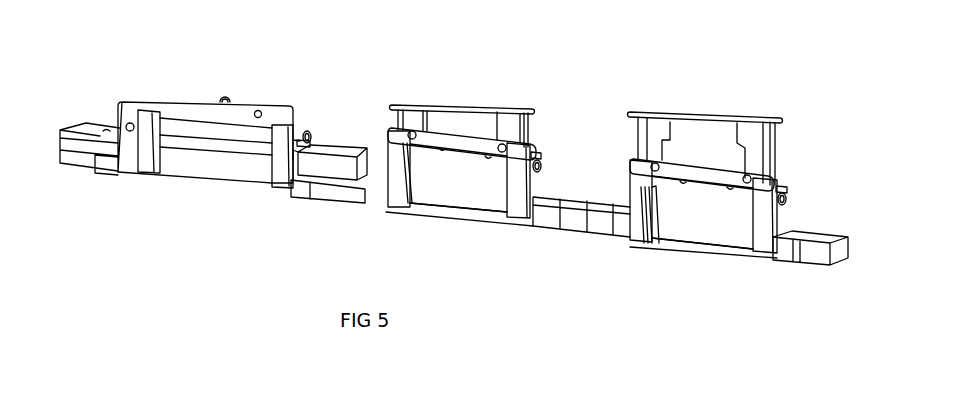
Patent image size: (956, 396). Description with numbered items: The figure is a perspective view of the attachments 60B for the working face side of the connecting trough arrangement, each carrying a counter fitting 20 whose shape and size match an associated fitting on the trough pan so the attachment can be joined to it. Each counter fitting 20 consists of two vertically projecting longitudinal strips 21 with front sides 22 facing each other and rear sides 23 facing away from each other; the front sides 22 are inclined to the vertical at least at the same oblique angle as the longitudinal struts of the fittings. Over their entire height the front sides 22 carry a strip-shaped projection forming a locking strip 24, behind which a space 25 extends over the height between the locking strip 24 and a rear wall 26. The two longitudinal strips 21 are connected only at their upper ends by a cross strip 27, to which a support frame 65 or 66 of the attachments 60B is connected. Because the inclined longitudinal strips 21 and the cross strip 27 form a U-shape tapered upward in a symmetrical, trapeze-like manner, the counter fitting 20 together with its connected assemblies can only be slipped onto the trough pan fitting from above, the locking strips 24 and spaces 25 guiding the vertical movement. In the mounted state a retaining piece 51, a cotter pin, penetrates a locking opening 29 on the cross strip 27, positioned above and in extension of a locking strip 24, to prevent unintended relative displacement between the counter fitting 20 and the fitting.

The counter fitting 20 is at (190, 190).
The longitudinal strip 21 is at (147, 162).
The front side 22 is at (510, 170).
The rear side 23 is at (538, 180).
The locking strip 24 is at (655, 188).
The space 25 is at (655, 209).
The rear wall 26 is at (488, 195).
The cross strip 27 is at (205, 110).
The locking opening 29 is at (258, 111).
The retaining piece 51 is at (262, 108).
The attachment 60B is at (517, 68).
The support frame 65 is at (508, 128).
The support frame 66 is at (300, 125).